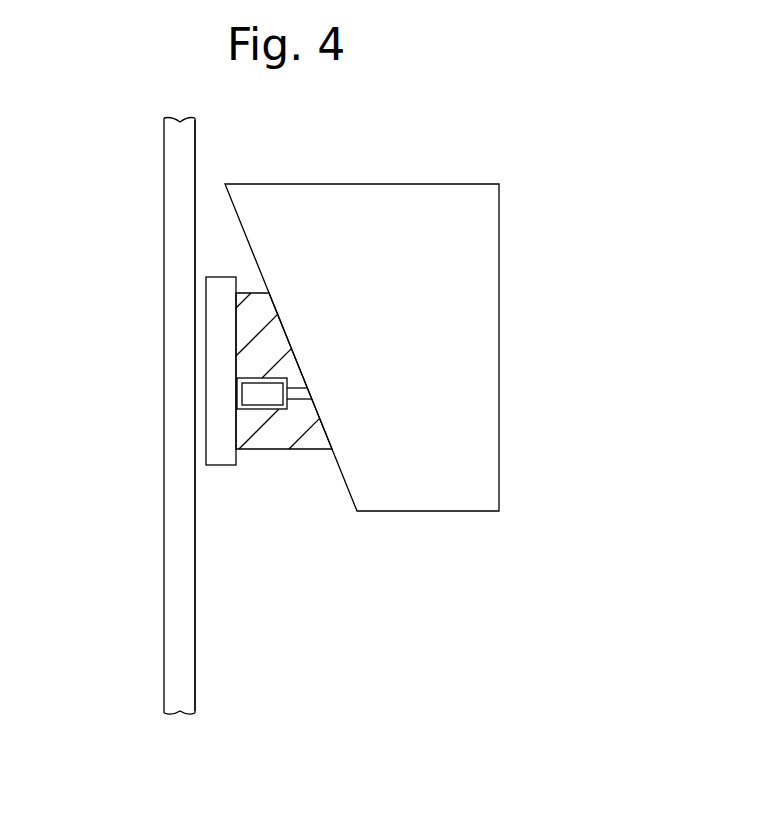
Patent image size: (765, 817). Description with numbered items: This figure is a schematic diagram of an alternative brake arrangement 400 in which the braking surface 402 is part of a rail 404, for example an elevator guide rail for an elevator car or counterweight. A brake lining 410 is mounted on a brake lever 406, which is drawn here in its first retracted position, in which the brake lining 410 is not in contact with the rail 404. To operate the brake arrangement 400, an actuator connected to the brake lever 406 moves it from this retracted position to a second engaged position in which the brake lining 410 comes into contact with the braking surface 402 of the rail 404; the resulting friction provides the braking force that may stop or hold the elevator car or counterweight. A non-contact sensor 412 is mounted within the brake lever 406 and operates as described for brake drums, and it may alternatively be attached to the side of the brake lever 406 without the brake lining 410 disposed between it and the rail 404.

The brake arrangement 400 is at (584, 158).
The braking surface 402 is at (194, 347).
The rail 404 is at (172, 610).
The brake lever 406 is at (274, 432).
The brake lining 410 is at (212, 284).
The non-contact sensor 412 is at (242, 393).